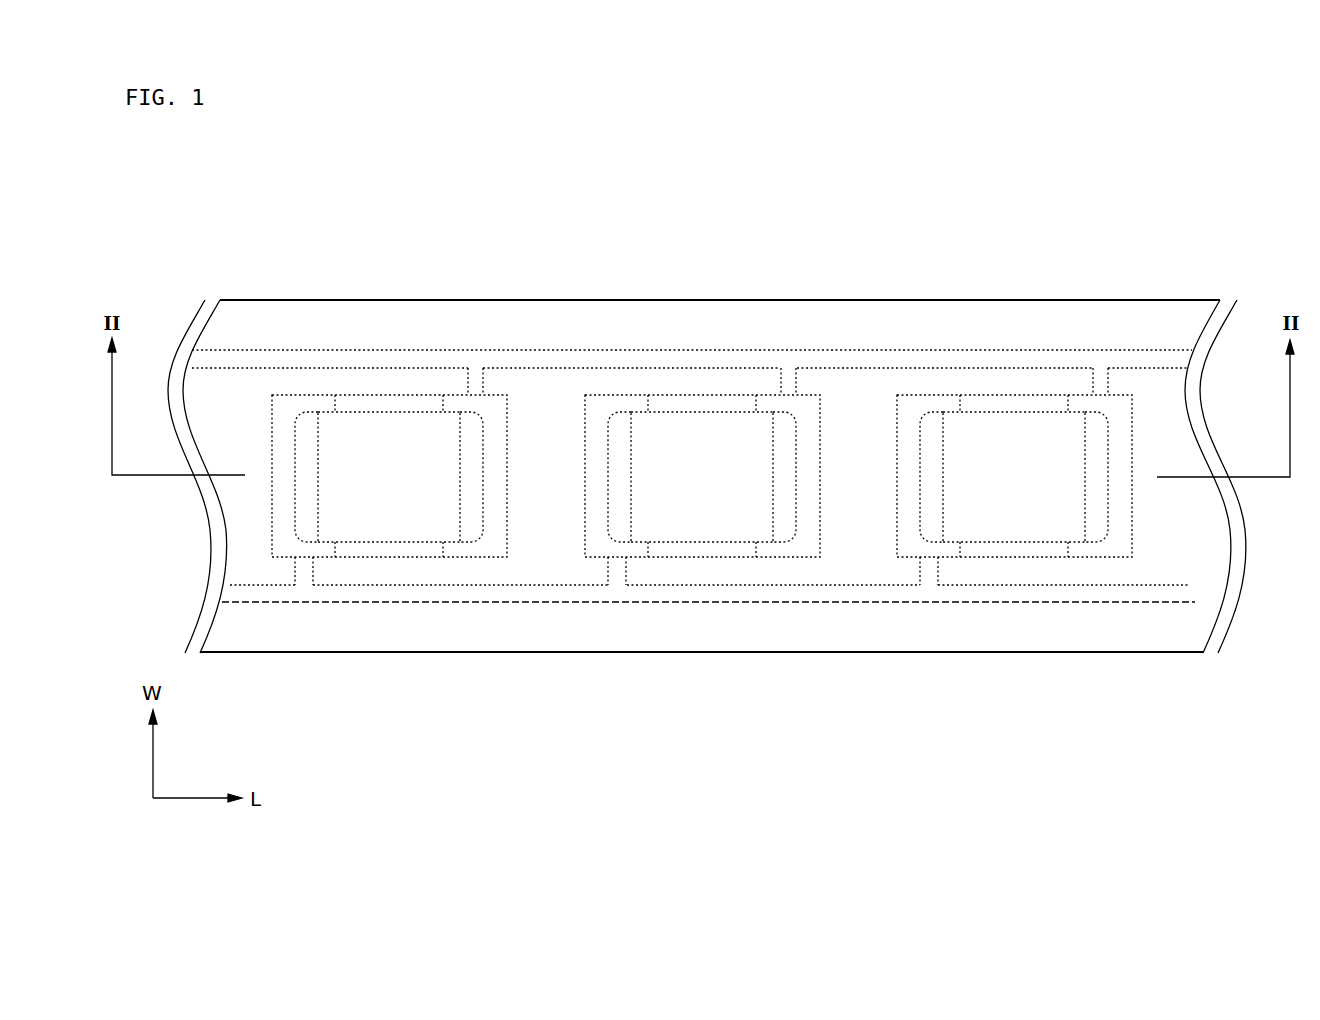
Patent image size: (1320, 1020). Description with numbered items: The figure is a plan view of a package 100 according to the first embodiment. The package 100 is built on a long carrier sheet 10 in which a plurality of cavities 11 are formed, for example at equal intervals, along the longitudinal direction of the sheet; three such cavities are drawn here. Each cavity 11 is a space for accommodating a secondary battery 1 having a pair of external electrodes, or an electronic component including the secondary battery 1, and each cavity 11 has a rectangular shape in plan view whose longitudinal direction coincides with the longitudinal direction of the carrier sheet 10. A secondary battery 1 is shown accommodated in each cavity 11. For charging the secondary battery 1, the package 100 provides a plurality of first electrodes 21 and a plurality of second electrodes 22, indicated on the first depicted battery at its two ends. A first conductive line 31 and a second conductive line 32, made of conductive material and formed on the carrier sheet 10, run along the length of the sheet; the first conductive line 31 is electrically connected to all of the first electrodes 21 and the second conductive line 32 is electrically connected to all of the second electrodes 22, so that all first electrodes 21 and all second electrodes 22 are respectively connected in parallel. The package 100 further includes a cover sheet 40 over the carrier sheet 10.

The package 100 is at (1107, 240).
The carrier sheet 10 is at (988, 300).
The cover sheet 40 is at (836, 300).
The second conductive line 32 is at (617, 350).
The first conductive line 31 is at (578, 602).
The cavity 11 is at (388, 557).
The secondary battery 1 is at (392, 412).
The first electrode 21 is at (305, 405).
The second electrode 22 is at (478, 405).